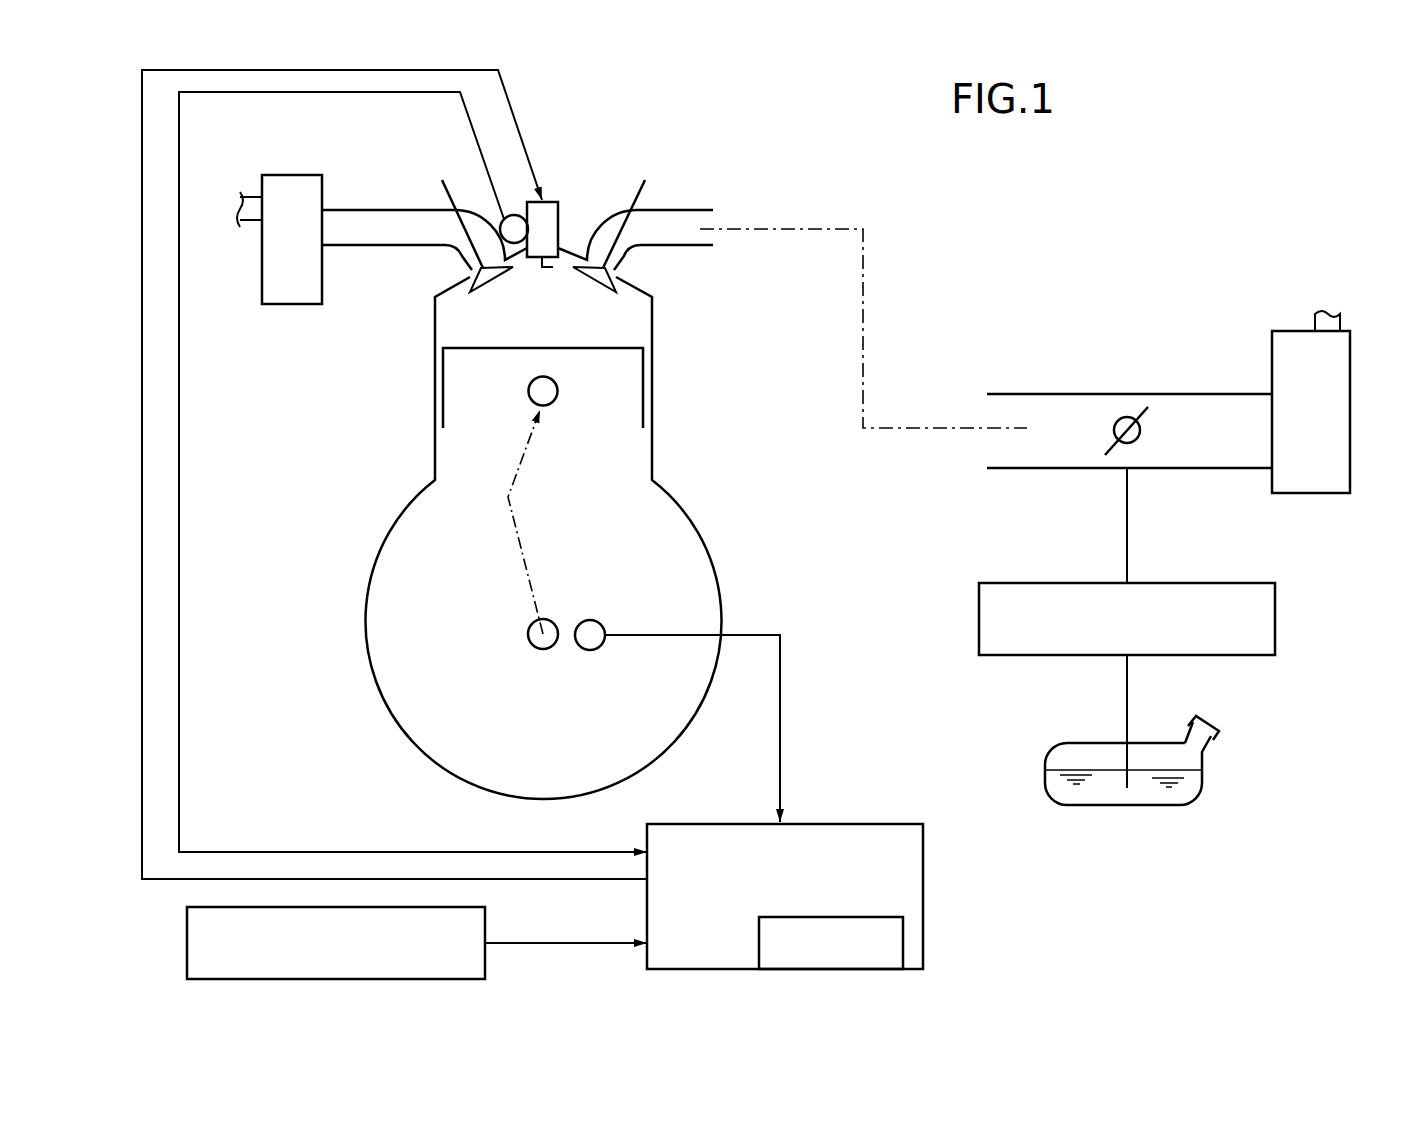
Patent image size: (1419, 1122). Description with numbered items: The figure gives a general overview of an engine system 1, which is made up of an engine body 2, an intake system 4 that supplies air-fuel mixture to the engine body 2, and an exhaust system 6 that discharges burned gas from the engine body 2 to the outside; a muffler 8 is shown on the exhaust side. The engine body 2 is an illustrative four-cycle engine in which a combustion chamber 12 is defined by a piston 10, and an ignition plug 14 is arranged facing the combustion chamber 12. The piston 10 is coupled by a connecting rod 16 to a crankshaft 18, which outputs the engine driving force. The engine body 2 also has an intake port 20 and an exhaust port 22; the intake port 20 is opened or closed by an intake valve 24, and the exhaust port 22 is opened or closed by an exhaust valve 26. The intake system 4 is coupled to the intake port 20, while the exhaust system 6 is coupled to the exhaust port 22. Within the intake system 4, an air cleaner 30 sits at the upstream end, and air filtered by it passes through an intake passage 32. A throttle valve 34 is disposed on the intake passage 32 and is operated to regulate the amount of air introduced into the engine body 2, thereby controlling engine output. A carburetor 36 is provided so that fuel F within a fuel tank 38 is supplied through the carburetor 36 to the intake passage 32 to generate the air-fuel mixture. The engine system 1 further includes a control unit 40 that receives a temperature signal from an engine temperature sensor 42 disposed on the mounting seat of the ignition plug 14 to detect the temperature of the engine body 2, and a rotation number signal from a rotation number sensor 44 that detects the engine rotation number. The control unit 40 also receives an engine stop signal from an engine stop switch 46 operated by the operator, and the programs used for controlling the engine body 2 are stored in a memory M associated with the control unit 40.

The engine system 1 is at (1242, 160).
The engine body 2 is at (717, 182).
The intake system 4 is at (1023, 330).
The exhaust system 6 is at (350, 172).
The muffler 8 is at (293, 305).
The piston 10 is at (612, 348).
The combustion chamber 12 is at (497, 315).
The ignition plug 14 is at (548, 202).
The connecting rod 16 is at (518, 537).
The crankshaft 18 is at (528, 634).
The intake port 20 is at (616, 270).
The exhaust port 22 is at (470, 264).
The intake valve 24 is at (640, 179).
The exhaust valve 26 is at (443, 190).
The air cleaner 30 is at (1350, 382).
The intake passage 32 is at (1223, 405).
The throttle valve 34 is at (1137, 413).
The carburetor 36 is at (1275, 600).
The fuel tank 38 is at (1202, 776).
The fuel F is at (1105, 795).
The control unit 40 is at (923, 872).
The engine temperature sensor 42 is at (505, 219).
The rotation number sensor 44 is at (590, 620).
The engine stop switch 46 is at (187, 953).
The memory M is at (903, 934).